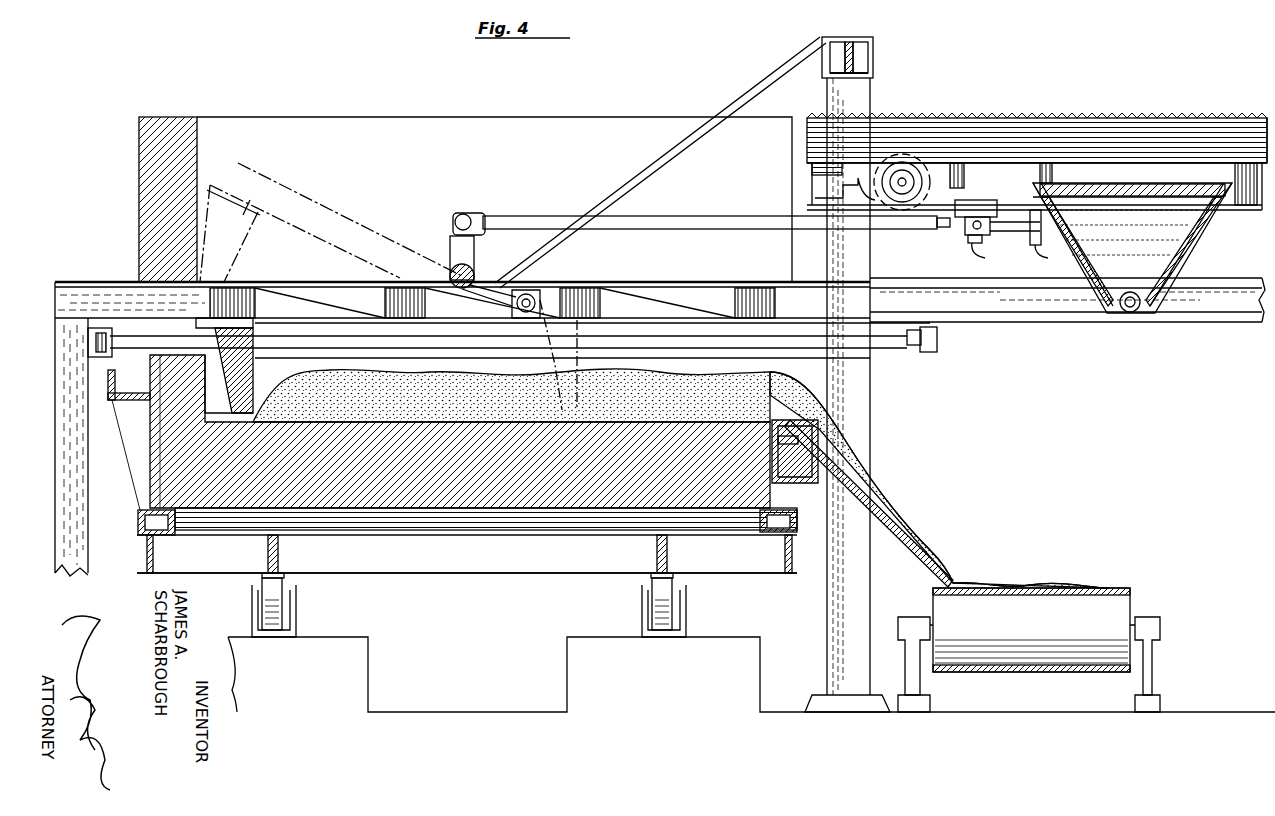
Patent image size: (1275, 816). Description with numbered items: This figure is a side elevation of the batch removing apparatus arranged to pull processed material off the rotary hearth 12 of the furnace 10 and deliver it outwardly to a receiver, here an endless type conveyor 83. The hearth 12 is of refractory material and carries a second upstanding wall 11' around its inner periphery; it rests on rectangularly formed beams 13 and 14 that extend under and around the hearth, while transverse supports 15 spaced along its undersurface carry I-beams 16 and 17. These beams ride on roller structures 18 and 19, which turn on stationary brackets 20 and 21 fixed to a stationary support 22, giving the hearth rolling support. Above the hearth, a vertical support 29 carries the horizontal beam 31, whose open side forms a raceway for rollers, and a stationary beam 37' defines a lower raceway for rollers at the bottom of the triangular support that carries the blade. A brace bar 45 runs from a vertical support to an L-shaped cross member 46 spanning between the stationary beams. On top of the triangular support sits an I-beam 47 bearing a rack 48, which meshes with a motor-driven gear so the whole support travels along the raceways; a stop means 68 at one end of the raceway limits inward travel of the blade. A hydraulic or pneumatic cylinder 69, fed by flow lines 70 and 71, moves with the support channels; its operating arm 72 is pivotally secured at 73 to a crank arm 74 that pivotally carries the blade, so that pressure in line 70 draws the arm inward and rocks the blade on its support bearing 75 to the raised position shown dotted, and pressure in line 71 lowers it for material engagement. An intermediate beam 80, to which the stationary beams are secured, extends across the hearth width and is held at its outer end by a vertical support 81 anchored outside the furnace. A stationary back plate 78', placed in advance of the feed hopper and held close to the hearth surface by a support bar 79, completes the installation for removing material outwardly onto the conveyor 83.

The furnace 10 is at (165, 117).
The brace bar 45 is at (740, 90).
The stop means 68 is at (860, 178).
The rack 48 is at (917, 112).
The I-beam 47 is at (1245, 151).
The horizontal beam 31 is at (1240, 207).
The stationary beam 37' is at (1067, 287).
The operating arm 72 is at (713, 216).
The pivot 73 is at (465, 214).
The crank arm 74 is at (452, 236).
The support bearing 75 is at (450, 270).
The L-shaped cross member 46 is at (500, 283).
The flow line 70 is at (966, 247).
The hydraulic or pneumatic cylinder 69 is at (1008, 232).
The flow line 71 is at (1044, 245).
The intermediate beam 80 is at (80, 282).
The back plate 78' is at (509, 346).
The support bar 79 is at (925, 342).
The vertical support 29 is at (870, 395).
The vertical support 81 is at (55, 470).
The second upstanding wall 11' is at (130, 440).
The rectangularly formed beam 14 is at (138, 520).
The rotary hearth 12 is at (453, 495).
The rectangularly formed beam 13 is at (797, 530).
The transverse support 15 is at (513, 540).
The I-beam 16 is at (668, 558).
The I-beam 17 is at (278, 555).
The roller structure 18 is at (682, 620).
The roller structure 19 is at (262, 588).
The stationary bracket 20 is at (642, 612).
The stationary bracket 21 is at (296, 625).
The stationary support 22 is at (473, 712).
The endless type conveyor 83 is at (1120, 588).